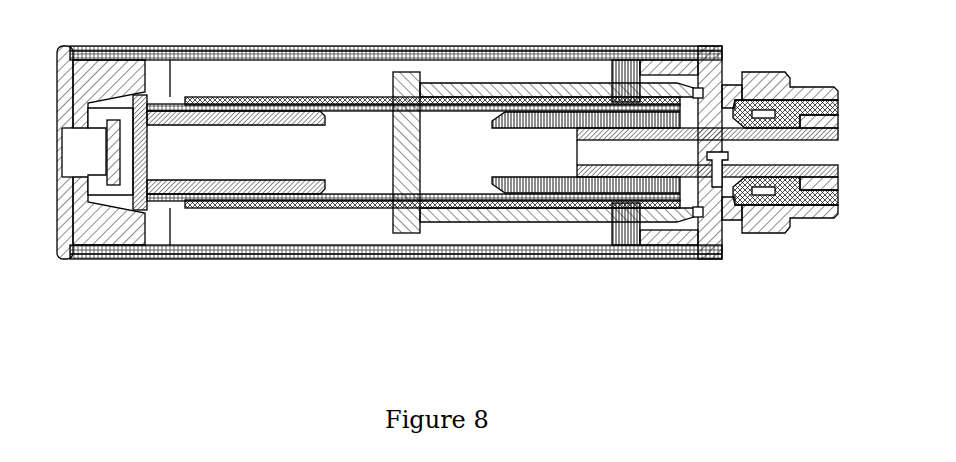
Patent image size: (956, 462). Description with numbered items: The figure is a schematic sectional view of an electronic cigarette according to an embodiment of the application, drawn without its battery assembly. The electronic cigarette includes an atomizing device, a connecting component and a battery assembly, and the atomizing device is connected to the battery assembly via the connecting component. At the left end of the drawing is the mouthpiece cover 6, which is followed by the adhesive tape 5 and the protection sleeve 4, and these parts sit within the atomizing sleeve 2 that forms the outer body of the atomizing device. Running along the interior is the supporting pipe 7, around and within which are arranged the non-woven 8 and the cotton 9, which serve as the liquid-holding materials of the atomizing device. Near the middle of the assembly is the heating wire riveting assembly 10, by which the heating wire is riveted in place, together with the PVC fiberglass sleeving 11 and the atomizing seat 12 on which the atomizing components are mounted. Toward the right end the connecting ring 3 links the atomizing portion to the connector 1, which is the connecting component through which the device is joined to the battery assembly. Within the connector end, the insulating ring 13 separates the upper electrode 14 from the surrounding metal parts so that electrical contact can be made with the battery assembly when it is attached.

The connector 1 is at (730, 233).
The atomizing sleeve 2 is at (125, 259).
The connecting ring 3 is at (608, 259).
The protection sleeve 4 is at (104, 259).
The adhesive tape 5 is at (84, 259).
The mouthpiece cover 6 is at (63, 259).
The supporting pipe 7 is at (157, 259).
The non-woven 8 is at (196, 259).
The cotton 9 is at (231, 230).
The heating wire riveting assembly 10 is at (403, 233).
The PVC fiberglass sleeving 11 is at (454, 233).
The atomizing seat 12 is at (513, 233).
The insulating ring 13 is at (798, 218).
The upper electrode 14 is at (766, 233).